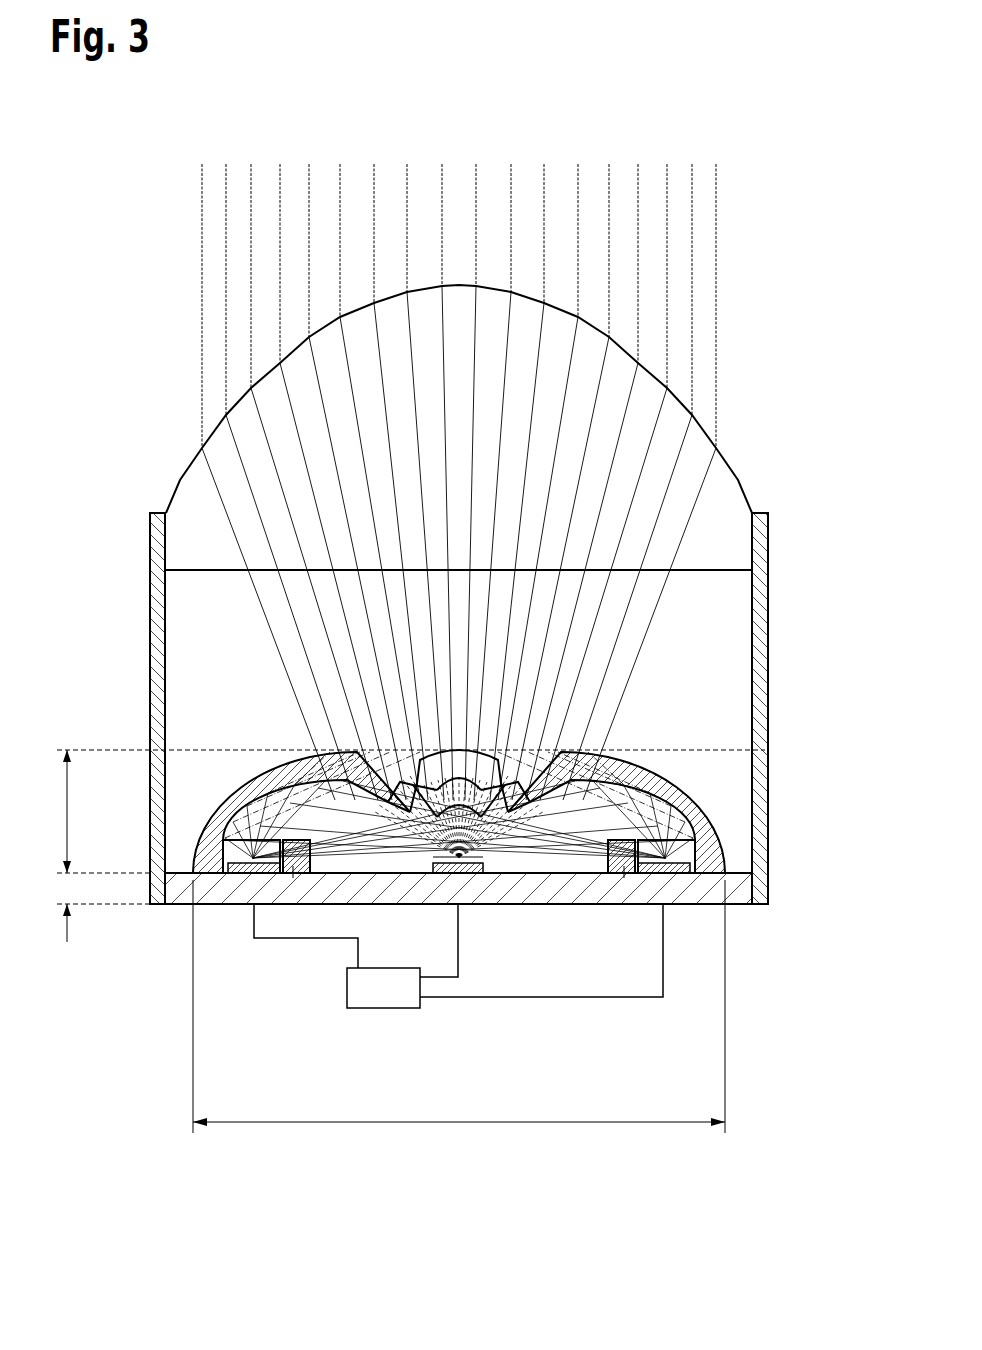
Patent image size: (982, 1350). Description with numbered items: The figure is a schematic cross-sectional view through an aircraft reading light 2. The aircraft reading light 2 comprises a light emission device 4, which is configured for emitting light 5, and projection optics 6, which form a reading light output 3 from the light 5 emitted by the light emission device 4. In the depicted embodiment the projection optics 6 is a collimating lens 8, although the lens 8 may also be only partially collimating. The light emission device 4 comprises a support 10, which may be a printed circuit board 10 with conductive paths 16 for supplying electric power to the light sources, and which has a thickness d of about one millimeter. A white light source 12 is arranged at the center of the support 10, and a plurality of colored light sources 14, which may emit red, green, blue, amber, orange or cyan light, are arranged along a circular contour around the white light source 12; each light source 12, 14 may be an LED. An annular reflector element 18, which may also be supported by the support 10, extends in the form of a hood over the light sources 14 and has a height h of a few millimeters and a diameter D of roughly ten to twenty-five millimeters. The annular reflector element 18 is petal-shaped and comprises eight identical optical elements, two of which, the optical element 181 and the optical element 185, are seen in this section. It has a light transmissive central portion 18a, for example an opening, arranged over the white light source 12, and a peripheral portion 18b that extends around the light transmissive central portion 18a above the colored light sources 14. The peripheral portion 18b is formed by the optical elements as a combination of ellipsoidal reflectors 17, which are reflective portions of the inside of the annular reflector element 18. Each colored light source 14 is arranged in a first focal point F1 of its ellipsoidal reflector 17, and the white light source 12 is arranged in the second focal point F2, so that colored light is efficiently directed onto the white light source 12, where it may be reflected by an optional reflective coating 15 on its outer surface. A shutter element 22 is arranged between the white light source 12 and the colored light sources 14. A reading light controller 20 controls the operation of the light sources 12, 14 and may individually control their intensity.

The aircraft reading light 2 is at (775, 455).
The reading light output 3 is at (146, 434).
The light emission device 4 is at (800, 853).
The light 5 is at (672, 632).
The projection optics 6 is at (125, 575).
The collimating lens 8 is at (735, 535).
The support 10 is at (740, 890).
The white light source 12 is at (470, 878).
The colored light sources 14 is at (281, 878).
The reflective coating 15 is at (510, 878).
The conductive paths 16 is at (242, 878).
The reflectors 17 is at (306, 878).
The annular reflector element 18 is at (716, 798).
The light transmissive central portion 18a is at (560, 733).
The peripheral portion 18b is at (630, 748).
The optical element 181 is at (660, 787).
The optical element 185 is at (237, 800).
The reading light controller 20 is at (382, 1008).
The shutter element 22 is at (293, 878).
The first focal point F1 is at (232, 855).
The second focal point F2 is at (457, 878).
The diameter D is at (459, 1018).
The height h is at (404, 811).
The thickness d is at (97, 927).